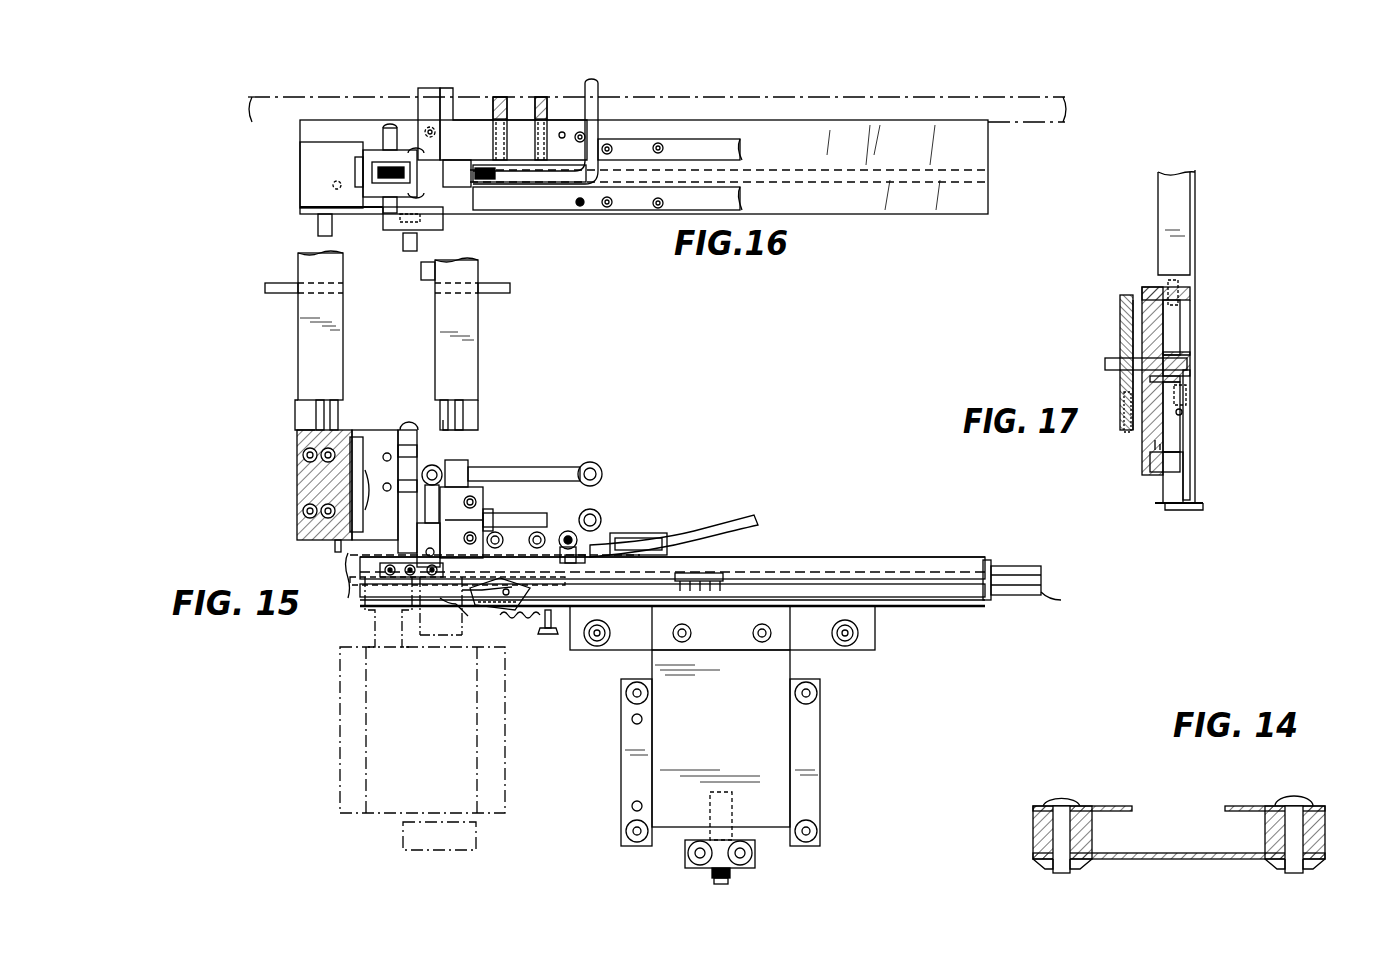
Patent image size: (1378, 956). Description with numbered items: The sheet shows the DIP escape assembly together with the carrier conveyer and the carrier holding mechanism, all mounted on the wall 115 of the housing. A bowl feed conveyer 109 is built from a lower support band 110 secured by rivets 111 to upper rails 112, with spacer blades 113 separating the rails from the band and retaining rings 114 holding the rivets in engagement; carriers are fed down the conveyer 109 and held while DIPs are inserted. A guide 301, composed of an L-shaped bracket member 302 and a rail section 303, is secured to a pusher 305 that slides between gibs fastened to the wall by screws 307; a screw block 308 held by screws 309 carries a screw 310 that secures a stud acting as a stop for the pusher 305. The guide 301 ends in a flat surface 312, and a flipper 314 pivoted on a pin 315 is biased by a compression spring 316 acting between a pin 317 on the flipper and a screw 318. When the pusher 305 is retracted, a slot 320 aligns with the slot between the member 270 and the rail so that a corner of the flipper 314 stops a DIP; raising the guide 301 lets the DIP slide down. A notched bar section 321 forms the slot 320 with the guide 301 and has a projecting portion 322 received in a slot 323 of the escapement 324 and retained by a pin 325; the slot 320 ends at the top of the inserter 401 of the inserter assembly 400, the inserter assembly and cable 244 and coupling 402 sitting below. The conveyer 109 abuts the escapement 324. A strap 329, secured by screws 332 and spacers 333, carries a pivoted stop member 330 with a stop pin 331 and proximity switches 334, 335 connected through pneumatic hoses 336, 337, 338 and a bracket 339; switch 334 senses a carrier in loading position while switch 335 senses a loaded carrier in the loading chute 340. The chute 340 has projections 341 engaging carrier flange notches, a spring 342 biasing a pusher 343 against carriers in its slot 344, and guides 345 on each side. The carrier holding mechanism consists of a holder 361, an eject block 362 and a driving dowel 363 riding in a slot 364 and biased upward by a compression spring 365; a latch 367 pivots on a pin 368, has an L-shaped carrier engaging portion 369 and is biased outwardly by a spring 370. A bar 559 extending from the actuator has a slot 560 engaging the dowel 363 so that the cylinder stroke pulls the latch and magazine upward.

In FIG. 16, the bowl feed conveyer 109 is at (742, 150).
In FIG. 15, the bowl feed conveyer 109 is at (700, 540).
In FIG. 14, the lower support band 110 is at (1146, 862).
In FIG. 14, the rivets 111 is at (1062, 794).
In FIG. 14, the upper rails 112 is at (1212, 794).
In FIG. 14, the spacer blades 113 is at (1038, 837).
In FIG. 14, the retaining rings 114 is at (1038, 870).
In FIG. 16, the wall 115 is at (828, 96).
In FIG. 15, the wall 115 is at (926, 641).
In FIG. 15, the cable 244 is at (1067, 598).
In FIG. 15, the member 270 is at (1044, 564).
In FIG. 15, the guide 301 is at (952, 598).
In FIG. 15, the L-shaped bracket member 302 is at (852, 652).
In FIG. 15, the rail section 303 is at (988, 565).
In FIG. 15, the pusher 305 is at (720, 712).
In FIG. 15, the screws 307 is at (818, 697).
In FIG. 15, the screw block 308 is at (757, 855).
In FIG. 15, the screws 309 is at (748, 870).
In FIG. 15, the screw 310 is at (714, 880).
In FIG. 15, the flat surface 312 is at (466, 610).
In FIG. 15, the flipper 314 is at (506, 617).
In FIG. 15, the pin 315 is at (518, 595).
In FIG. 15, the compression spring 316 is at (533, 584).
In FIG. 15, the pin 317 is at (462, 635).
In FIG. 15, the screw 318 is at (540, 631).
In FIG. 15, the slot 320 is at (864, 581).
In FIG. 15, the notched bar section 321 is at (806, 559).
In FIG. 15, the projecting portion 322 is at (586, 560).
In FIG. 15, the slot 323 is at (565, 560).
In FIG. 16, the escapement 324 is at (546, 208).
In FIG. 15, the escapement 324 is at (594, 533).
In FIG. 15, the pin 325 is at (624, 533).
In FIG. 15, the strap 329 is at (550, 506).
In FIG. 15, the pivoted stop member 330 is at (582, 523).
In FIG. 15, the stop pin 331 is at (592, 507).
In FIG. 16, the screws 332 is at (502, 98).
In FIG. 16, the spacers 333 is at (539, 131).
In FIG. 16, the proximity switch 334 is at (458, 190).
In FIG. 15, the proximity switch 334 is at (482, 458).
In FIG. 16, the proximity switch 335 is at (436, 88).
In FIG. 15, the proximity switch 335 is at (420, 399).
In FIG. 15, the pneumatic hose 336 is at (534, 504).
In FIG. 16, the pneumatic hose 337 is at (592, 98).
In FIG. 15, the pneumatic hose 337 is at (577, 439).
In FIG. 15, the pneumatic hose 338 is at (448, 459).
In FIG. 16, the angle bracket 339 is at (468, 96).
In FIG. 16, the loading chute 340 is at (350, 140).
In FIG. 15, the loading chute 340 is at (399, 441).
In FIG. 16, the projections 341 is at (417, 116).
In FIG. 15, the spring 342 is at (306, 496).
In FIG. 15, the pusher 343 is at (379, 394).
In FIG. 16, the slot 344 is at (324, 160).
In FIG. 16, the guides 345 is at (369, 106).
In FIG. 17, the holder 361 is at (1145, 288).
In FIG. 17, the eject block 362 is at (1160, 504).
In FIG. 17, the driving dowel 363 is at (1108, 358).
In FIG. 17, the slot 364 is at (1138, 322).
In FIG. 17, the compression spring 365 is at (1156, 383).
In FIG. 17, the latch 367 is at (1190, 440).
In FIG. 17, the pin 368 is at (1182, 411).
In FIG. 17, the L-shaped carrier engaging portion 369 is at (1198, 512).
In FIG. 17, the spring 370 is at (1156, 455).
In FIG. 15, the inserter assembly 400 is at (428, 726).
In FIG. 15, the inserter 401 is at (456, 606).
In FIG. 15, the gearbox 402 is at (405, 606).
In FIG. 17, the bar 559 is at (1118, 302).
In FIG. 17, the slot 560 is at (1121, 330).